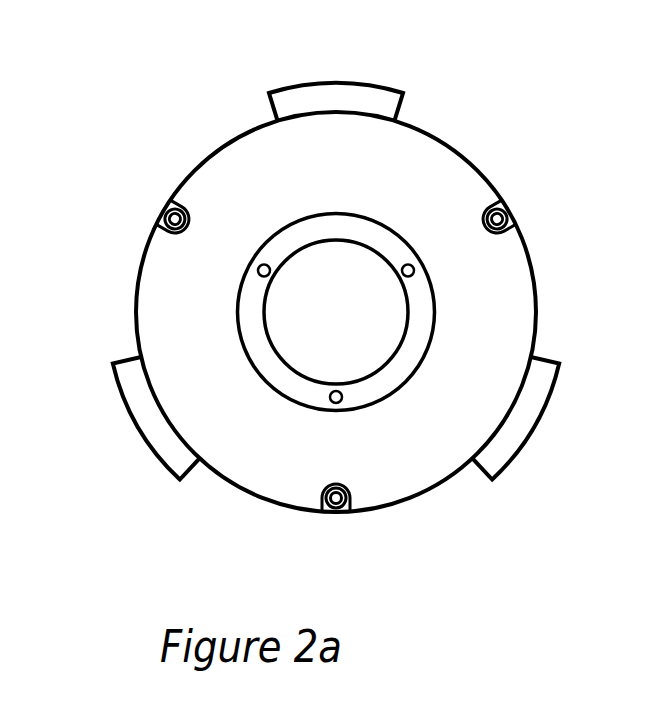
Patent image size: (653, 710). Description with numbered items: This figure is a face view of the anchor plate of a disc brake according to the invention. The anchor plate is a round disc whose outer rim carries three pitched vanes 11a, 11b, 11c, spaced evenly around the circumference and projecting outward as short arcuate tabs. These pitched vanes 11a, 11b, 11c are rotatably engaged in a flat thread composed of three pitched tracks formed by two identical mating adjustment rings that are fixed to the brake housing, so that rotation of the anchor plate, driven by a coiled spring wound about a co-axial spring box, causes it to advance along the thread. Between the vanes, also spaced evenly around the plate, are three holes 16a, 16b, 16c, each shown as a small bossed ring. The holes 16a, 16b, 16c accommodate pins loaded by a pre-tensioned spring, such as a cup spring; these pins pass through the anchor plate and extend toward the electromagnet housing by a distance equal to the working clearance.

The pitched vane 11a is at (527, 418).
The pitched vane 11b is at (360, 93).
The pitched vane 11c is at (162, 444).
The hole 16a is at (345, 517).
The hole 16b is at (167, 215).
The hole 16c is at (507, 212).